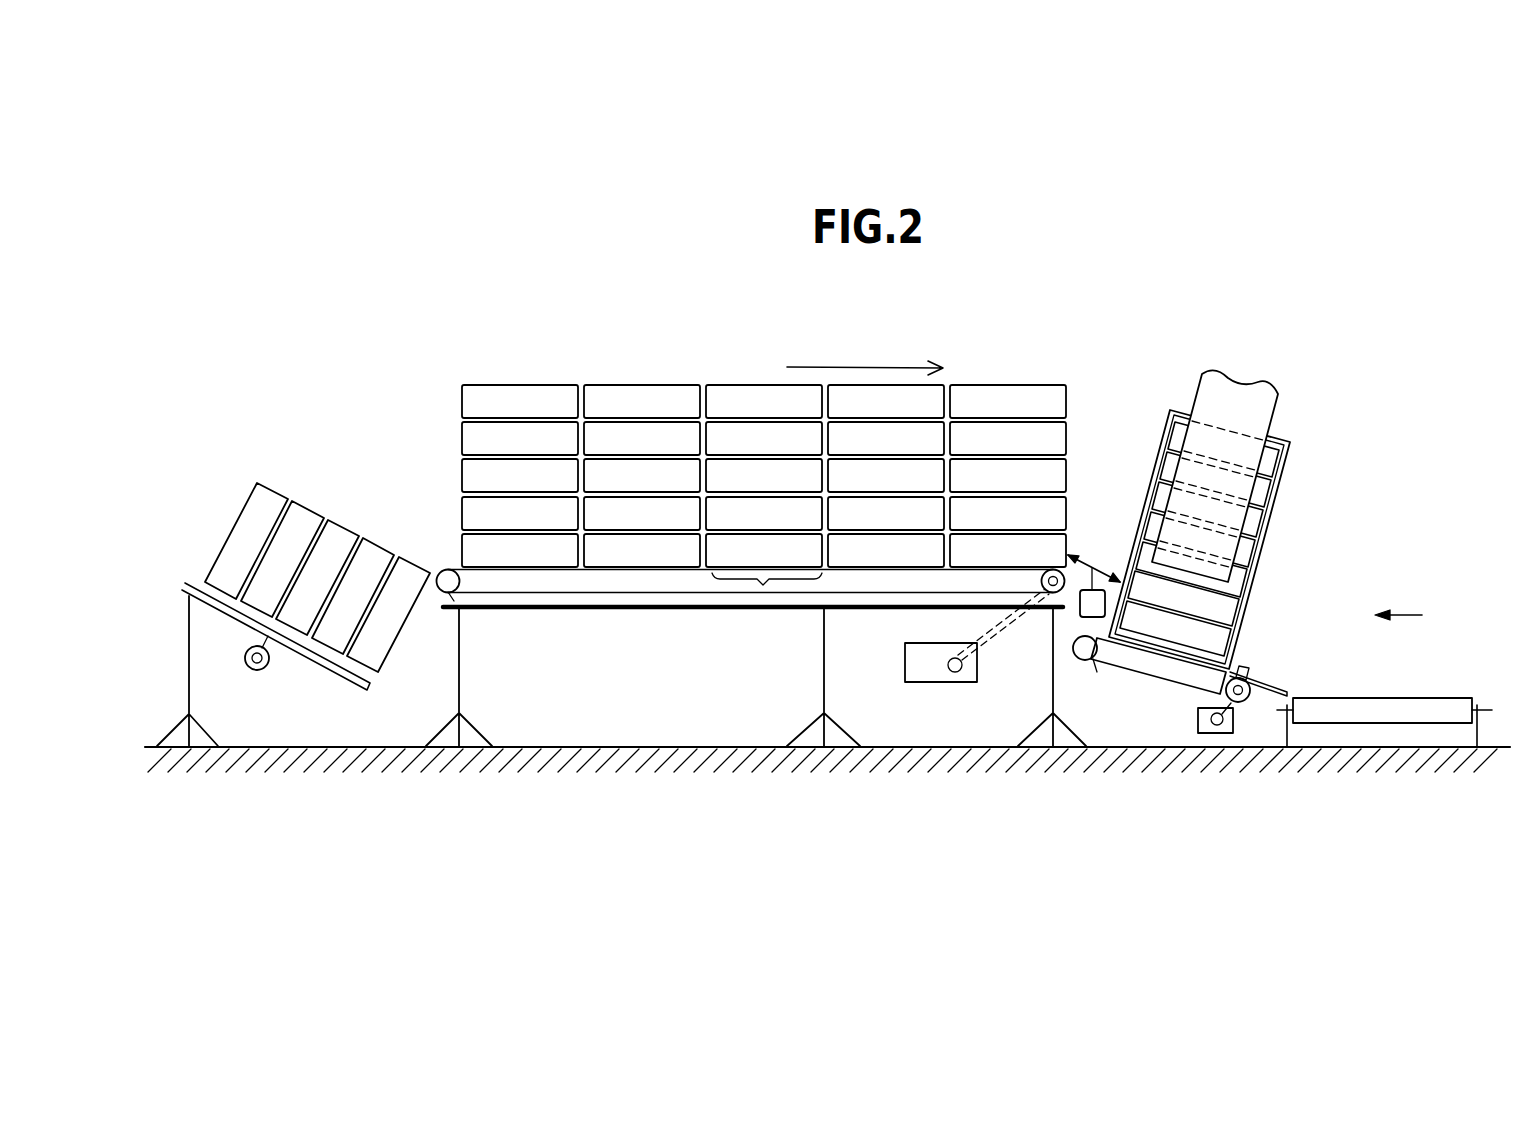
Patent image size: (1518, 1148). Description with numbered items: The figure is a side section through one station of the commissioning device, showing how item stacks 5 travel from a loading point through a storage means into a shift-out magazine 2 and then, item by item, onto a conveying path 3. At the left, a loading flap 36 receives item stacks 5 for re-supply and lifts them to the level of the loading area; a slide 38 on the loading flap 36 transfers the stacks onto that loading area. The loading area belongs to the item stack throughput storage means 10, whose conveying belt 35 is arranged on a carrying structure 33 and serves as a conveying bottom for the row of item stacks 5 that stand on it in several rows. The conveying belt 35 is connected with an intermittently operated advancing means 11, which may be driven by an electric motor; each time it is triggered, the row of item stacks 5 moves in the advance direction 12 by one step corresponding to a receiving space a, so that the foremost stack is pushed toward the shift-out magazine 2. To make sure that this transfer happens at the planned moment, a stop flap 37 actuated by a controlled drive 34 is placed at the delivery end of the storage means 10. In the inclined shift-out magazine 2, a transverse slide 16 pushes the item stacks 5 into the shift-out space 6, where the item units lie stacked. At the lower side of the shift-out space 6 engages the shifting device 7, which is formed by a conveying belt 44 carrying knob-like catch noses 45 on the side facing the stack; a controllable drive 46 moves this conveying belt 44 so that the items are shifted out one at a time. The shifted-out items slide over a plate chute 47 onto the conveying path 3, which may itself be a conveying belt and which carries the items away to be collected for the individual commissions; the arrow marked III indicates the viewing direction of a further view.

The shift-out magazine 2 is at (1267, 543).
The conveying path 3 is at (1395, 708).
The item stack 5 is at (267, 505).
The shift-out space 6 is at (1273, 440).
The shifting device 7 is at (1202, 581).
The item stack throughput storage means 10 is at (584, 583).
The advancing means 11 is at (928, 665).
The advance direction 12 is at (877, 367).
The transverse slide 16 is at (1253, 403).
The carrying structure 33 is at (517, 609).
The drive 34 is at (1078, 612).
The conveying belt 35 is at (637, 572).
The loading flap 36 is at (395, 650).
The stop flap 37 is at (1093, 556).
The slide 38 is at (275, 643).
The conveying belt 44 is at (1192, 667).
The catch noses 45 is at (1243, 672).
The controllable drive 46 is at (1207, 730).
The plate chute 47 is at (1280, 685).
The receiving space a is at (763, 586).
The view direction III is at (1459, 627).